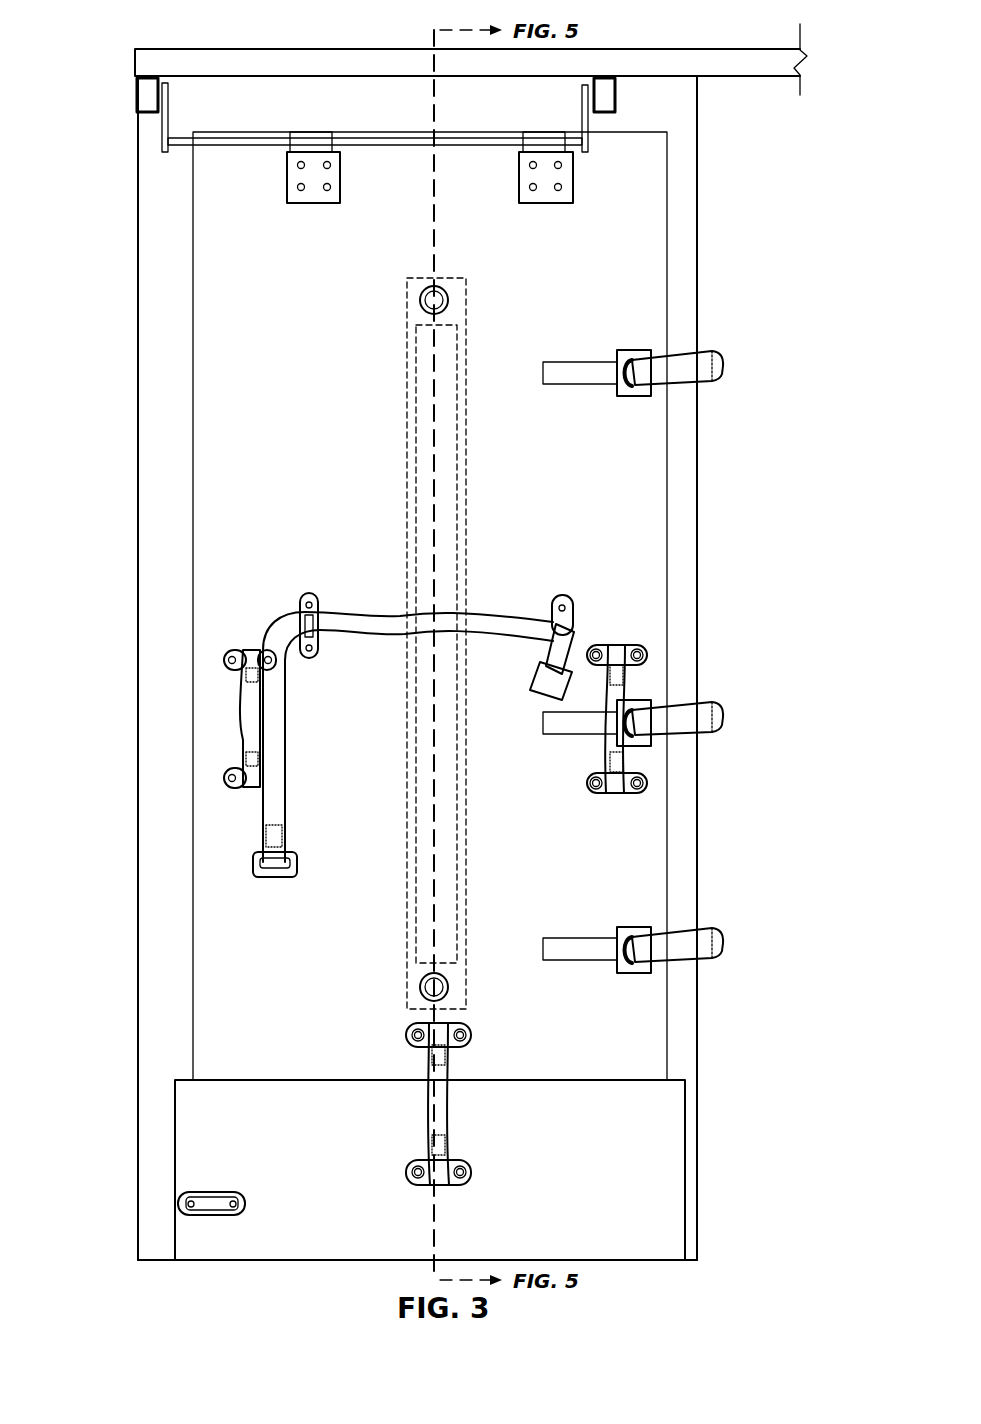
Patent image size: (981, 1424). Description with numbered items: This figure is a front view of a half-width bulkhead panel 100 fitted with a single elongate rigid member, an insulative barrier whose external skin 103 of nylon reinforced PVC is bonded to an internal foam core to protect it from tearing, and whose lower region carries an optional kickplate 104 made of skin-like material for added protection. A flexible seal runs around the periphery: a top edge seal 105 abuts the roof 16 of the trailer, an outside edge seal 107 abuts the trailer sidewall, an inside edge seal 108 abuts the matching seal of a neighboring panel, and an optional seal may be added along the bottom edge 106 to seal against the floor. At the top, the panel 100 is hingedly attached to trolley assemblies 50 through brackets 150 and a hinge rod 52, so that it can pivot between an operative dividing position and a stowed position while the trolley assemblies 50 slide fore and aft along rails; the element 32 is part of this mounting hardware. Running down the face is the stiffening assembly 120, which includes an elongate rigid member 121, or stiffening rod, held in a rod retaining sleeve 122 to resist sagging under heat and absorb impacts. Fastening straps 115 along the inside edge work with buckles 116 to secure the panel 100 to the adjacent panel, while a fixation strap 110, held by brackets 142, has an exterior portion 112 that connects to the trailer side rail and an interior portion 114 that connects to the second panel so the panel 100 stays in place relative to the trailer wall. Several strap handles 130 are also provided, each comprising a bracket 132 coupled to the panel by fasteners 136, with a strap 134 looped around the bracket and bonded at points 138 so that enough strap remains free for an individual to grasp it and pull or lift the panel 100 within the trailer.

The panel 100 is at (80, 45).
The roof 16 is at (697, 63).
The top edge seal 105 is at (345, 97).
The outside edge seal 107 is at (158, 520).
The inside edge seal 108 is at (678, 518).
The bottom edge 106 is at (250, 1267).
The external skin 103 is at (578, 276).
The kickplate 104 is at (578, 1170).
The hinge rod 52 is at (362, 145).
The trolley assembly 50 is at (375, 124).
The bracket 32 is at (147, 112).
The bracket 150 is at (312, 195).
The stiffening assembly 120 is at (396, 626).
The elongate rigid member 121 is at (427, 360).
The rod retaining sleeve 122 is at (412, 313).
The fastening strap 115 is at (585, 372).
The buckle 116 is at (618, 372).
The fixation strap 110 is at (270, 760).
The exterior portion 112 is at (312, 885).
The interior portion 114 is at (533, 698).
The bracket 142 is at (320, 596).
The strap handle 130 is at (357, 869).
The bracket 132 is at (172, 684).
The strap 134 is at (247, 717).
The fastener 136 is at (222, 660).
The bonding point 138 is at (243, 677).